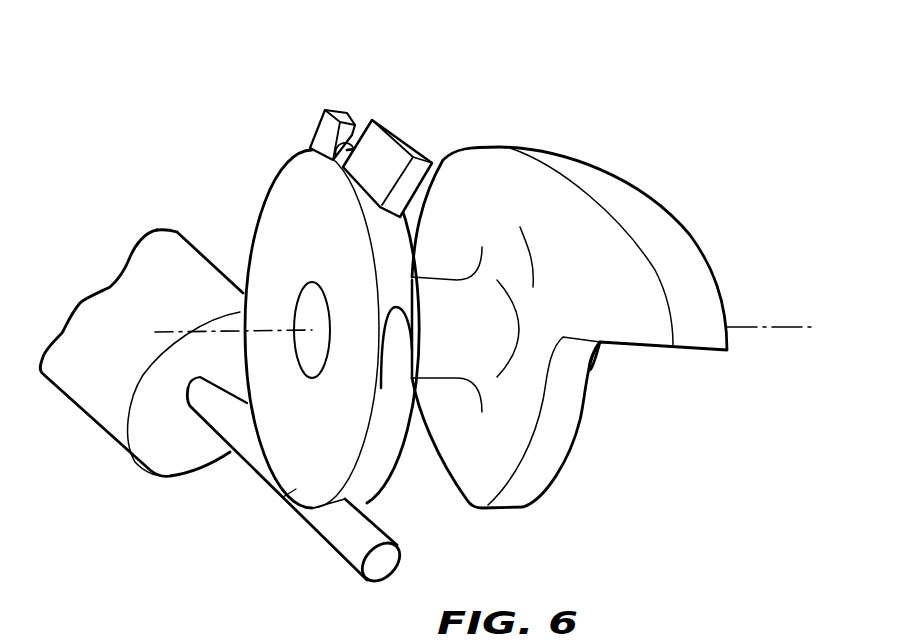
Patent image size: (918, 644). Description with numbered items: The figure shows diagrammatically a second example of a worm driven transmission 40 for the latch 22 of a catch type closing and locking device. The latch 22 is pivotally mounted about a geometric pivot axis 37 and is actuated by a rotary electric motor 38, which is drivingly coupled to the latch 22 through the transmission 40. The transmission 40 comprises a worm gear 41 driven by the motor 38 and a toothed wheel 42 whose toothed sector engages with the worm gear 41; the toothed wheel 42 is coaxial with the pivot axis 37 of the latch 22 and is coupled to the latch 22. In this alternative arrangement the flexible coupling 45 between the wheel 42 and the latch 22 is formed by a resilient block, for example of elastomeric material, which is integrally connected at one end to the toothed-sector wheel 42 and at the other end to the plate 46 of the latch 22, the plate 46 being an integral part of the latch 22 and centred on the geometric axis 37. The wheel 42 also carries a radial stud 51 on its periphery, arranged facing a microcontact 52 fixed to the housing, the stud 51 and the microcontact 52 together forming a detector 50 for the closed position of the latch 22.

The latch 22 is at (673, 240).
The geometric pivot axis 37 is at (262, 330).
The rotary electric motor 38 is at (87, 392).
The transmission 40 is at (311, 502).
The worm gear 41 is at (370, 528).
The toothed wheel 42 is at (298, 490).
The flexible coupling 45 is at (480, 358).
The plate 46 is at (520, 239).
The detector 50 is at (391, 119).
The radial stud 51 is at (342, 113).
The microcontact 52 is at (398, 147).